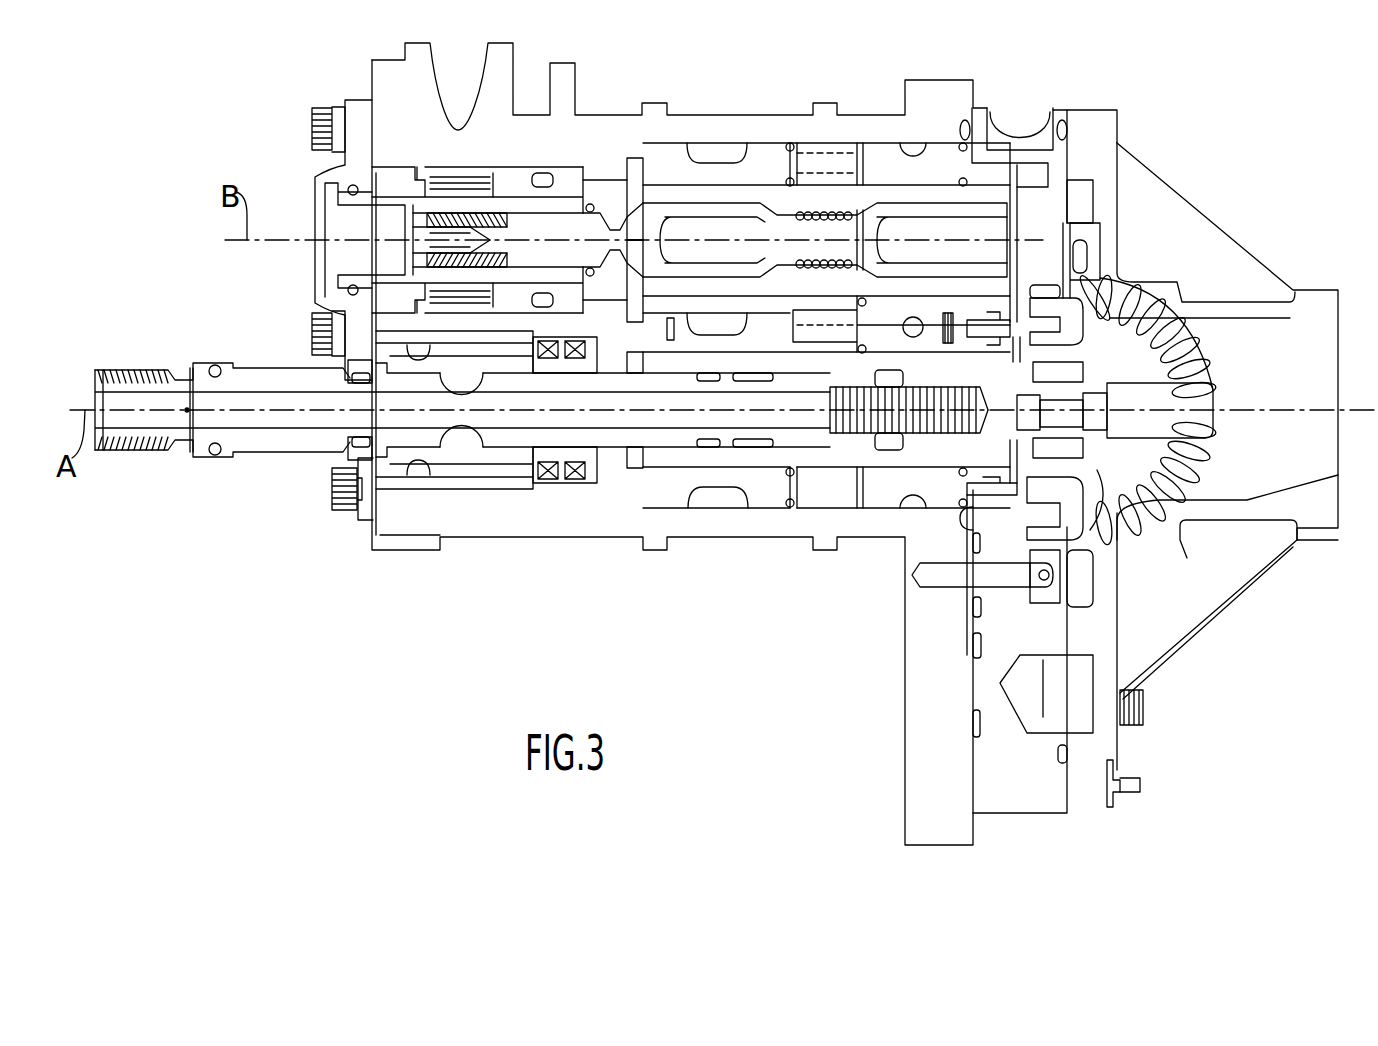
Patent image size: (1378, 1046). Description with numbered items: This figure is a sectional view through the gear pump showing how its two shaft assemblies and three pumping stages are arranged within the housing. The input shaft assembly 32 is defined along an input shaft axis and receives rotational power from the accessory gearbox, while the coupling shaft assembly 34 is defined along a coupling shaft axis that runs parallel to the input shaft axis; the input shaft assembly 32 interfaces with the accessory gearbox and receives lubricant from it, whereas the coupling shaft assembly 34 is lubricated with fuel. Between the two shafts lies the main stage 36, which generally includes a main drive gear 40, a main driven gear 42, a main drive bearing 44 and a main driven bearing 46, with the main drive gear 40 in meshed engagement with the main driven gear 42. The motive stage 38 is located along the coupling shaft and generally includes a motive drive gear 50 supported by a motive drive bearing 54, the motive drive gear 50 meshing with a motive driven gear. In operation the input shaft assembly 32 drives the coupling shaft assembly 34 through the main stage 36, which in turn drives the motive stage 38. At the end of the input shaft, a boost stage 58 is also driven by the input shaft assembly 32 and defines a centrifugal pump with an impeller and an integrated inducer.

The input shaft assembly 32 is at (276, 480).
The coupling shaft assembly 34 is at (325, 272).
The main stage 36 is at (727, 444).
The motive stage 38 is at (455, 168).
The main drive gear 40 is at (822, 464).
The main driven gear 42 is at (814, 190).
The main drive bearing 44 is at (668, 488).
The main driven bearing 46 is at (668, 175).
The motive drive gear 50 is at (474, 208).
The motive drive bearing 54 is at (511, 200).
The boost stage 58 is at (1147, 350).